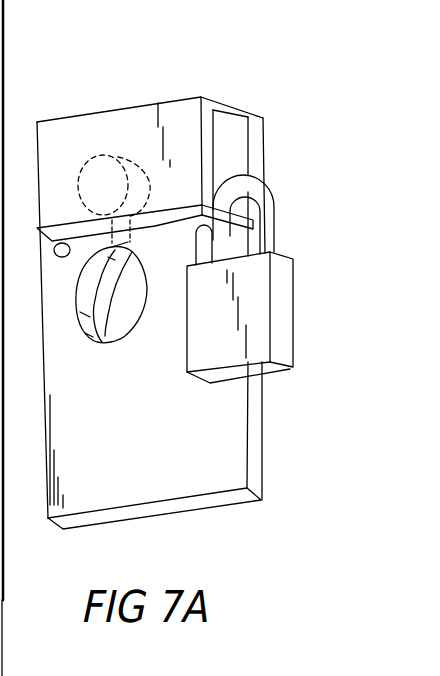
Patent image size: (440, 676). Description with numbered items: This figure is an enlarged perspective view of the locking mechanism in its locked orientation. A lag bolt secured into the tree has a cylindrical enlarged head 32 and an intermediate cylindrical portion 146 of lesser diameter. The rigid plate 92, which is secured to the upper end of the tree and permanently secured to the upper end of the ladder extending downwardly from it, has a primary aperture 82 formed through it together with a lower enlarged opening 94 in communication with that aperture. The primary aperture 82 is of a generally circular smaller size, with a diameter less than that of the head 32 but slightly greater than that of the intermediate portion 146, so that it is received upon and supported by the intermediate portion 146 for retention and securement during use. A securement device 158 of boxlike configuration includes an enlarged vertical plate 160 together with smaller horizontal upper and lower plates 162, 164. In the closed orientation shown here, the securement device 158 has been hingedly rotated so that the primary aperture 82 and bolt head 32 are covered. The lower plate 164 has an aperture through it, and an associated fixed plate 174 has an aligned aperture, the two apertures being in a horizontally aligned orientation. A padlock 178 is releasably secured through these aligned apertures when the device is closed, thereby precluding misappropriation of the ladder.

The cylindrical enlarged head 32 is at (132, 173).
The primary aperture 82 is at (128, 273).
The rigid plate 92 is at (222, 477).
The lower enlarged opening 94 is at (103, 328).
The intermediate cylindrical portion 146 is at (160, 197).
The securement device 158 is at (60, 150).
The enlarged vertical plate 160 is at (212, 145).
The upper plate 162 is at (212, 96).
The lower plate 164 is at (72, 242).
The fixed plate 174 is at (238, 247).
The padlock 178 is at (278, 316).